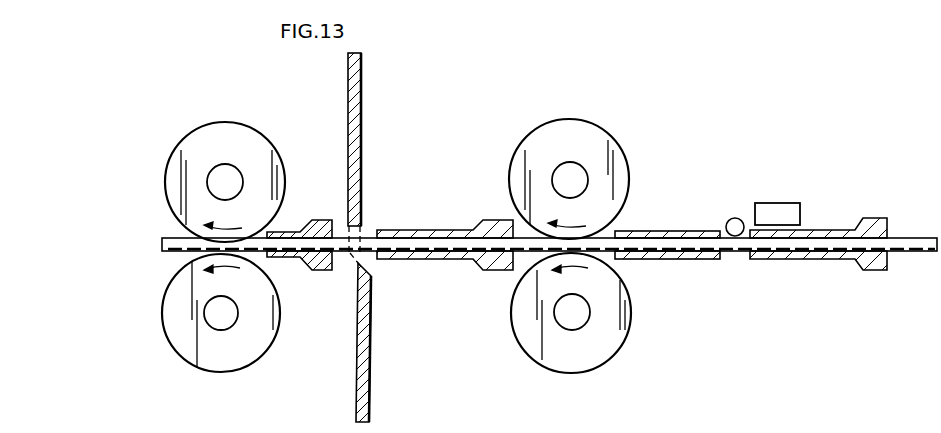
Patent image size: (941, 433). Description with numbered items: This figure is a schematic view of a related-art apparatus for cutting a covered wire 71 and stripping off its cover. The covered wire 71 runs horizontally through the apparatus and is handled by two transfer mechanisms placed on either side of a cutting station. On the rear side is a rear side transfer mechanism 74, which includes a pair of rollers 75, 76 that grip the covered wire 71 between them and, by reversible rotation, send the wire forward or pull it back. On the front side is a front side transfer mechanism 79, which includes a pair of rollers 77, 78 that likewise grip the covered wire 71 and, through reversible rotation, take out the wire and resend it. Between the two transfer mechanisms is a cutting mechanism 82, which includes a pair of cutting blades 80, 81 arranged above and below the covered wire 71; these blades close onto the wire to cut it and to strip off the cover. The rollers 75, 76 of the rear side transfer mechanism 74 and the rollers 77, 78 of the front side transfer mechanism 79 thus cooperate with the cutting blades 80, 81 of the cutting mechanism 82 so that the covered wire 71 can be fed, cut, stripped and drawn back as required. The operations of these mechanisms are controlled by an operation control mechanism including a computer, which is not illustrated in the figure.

The covered wire 71 is at (906, 243).
The rear side transfer mechanism 74 is at (602, 246).
The roller 75 is at (613, 199).
The roller 76 is at (604, 249).
The roller 77 is at (171, 203).
The roller 78 is at (173, 277).
The front side transfer mechanism 79 is at (189, 247).
The cutting blade 80 is at (362, 124).
The cutting blade 81 is at (364, 358).
The cutting mechanism 82 is at (362, 76).